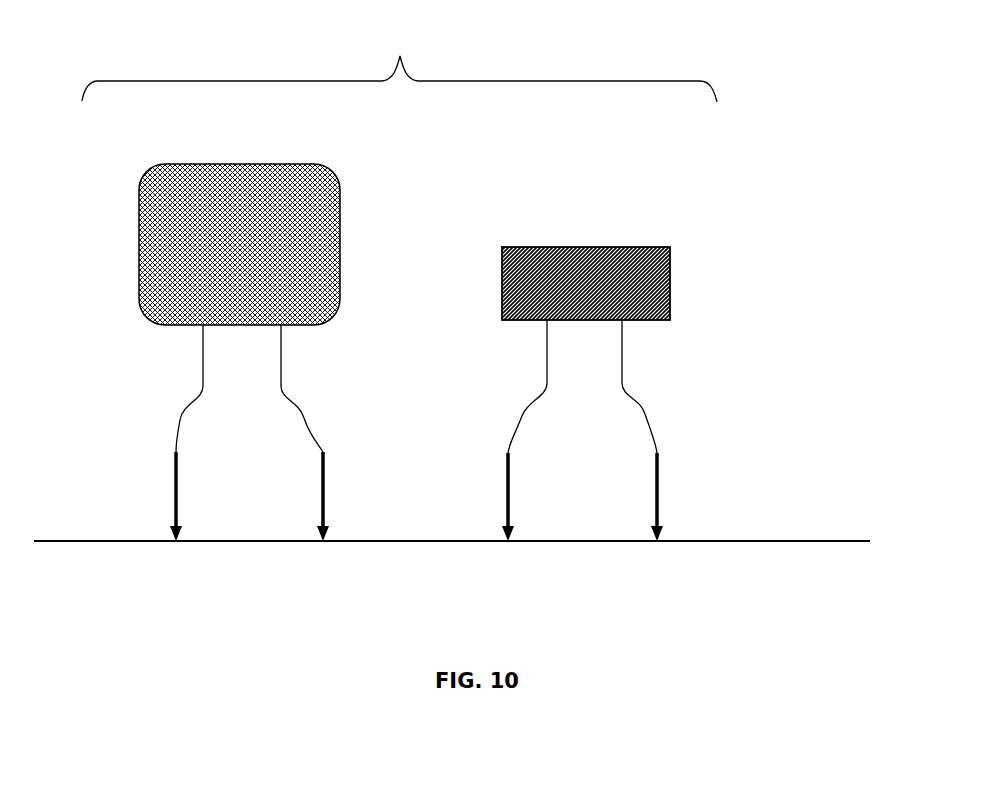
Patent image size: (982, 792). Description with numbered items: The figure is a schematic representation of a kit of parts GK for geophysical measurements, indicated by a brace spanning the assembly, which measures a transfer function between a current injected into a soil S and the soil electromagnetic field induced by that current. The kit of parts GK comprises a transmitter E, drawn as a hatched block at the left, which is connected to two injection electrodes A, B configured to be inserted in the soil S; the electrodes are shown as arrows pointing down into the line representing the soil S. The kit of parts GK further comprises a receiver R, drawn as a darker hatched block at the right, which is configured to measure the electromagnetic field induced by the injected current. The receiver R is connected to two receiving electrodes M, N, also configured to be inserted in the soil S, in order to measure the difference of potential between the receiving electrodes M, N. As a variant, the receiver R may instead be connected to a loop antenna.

The kit of parts GK is at (399, 60).
The transmitter E is at (139, 237).
The receiver R is at (600, 247).
The injection electrode A is at (172, 523).
The injection electrode B is at (326, 510).
The receiving electrode M is at (504, 518).
The receiving electrode N is at (658, 503).
The soil S is at (795, 540).